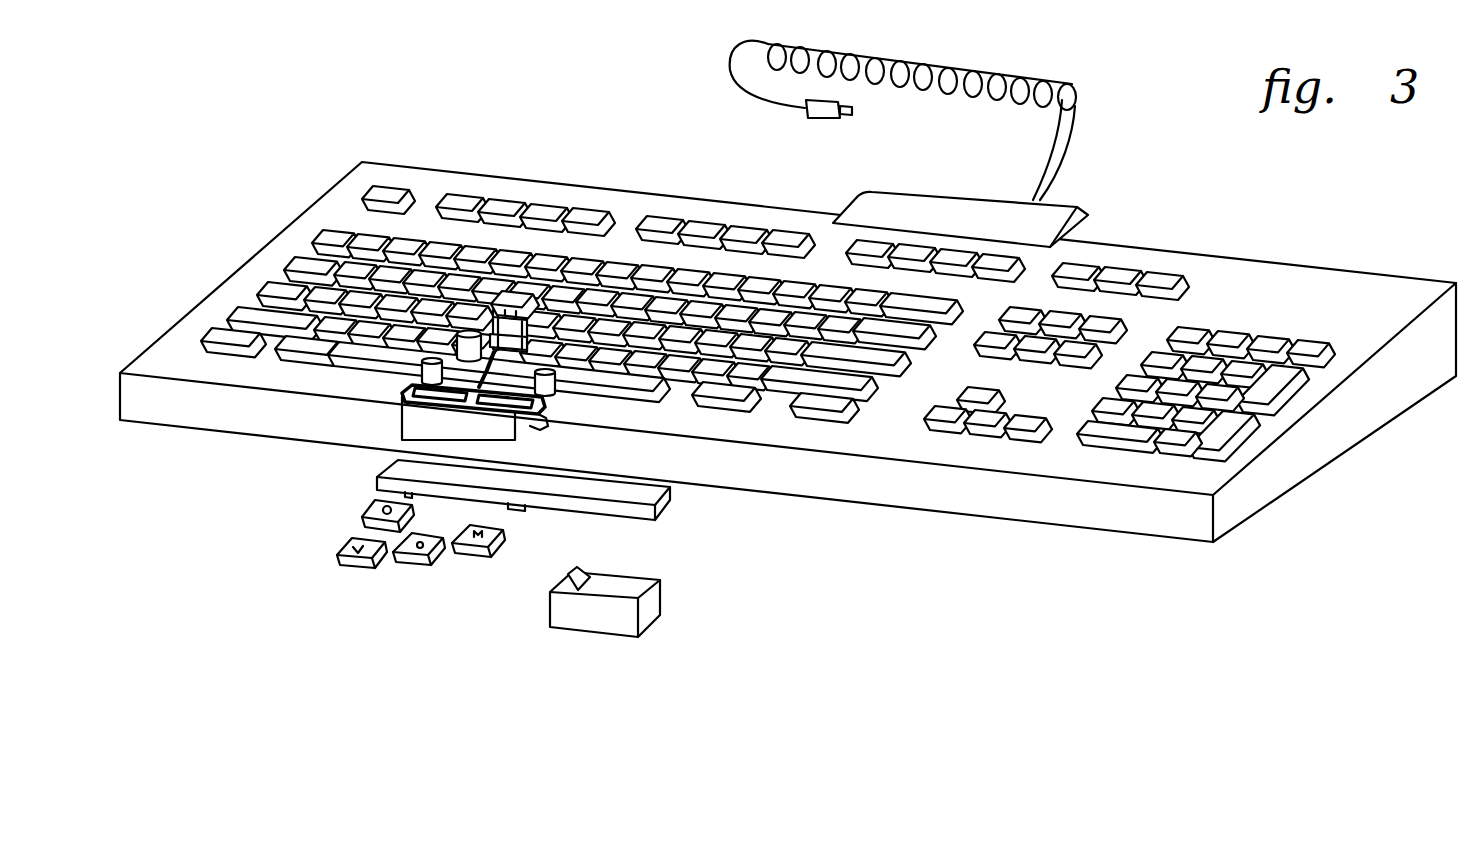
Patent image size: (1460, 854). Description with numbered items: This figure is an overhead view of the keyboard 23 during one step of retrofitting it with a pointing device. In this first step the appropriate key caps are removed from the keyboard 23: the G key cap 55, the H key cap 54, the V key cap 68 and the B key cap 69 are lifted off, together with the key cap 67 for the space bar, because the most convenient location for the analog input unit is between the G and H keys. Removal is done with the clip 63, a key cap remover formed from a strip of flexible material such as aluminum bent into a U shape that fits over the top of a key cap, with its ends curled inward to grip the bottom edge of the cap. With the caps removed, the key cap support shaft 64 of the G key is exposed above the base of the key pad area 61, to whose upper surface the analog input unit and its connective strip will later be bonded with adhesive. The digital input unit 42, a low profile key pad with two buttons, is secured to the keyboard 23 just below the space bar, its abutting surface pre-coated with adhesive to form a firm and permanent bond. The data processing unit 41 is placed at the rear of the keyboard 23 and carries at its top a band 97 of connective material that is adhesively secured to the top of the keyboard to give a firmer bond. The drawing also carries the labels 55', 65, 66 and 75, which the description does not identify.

The keyboard 23 is at (1252, 228).
The data processing unit 41 is at (972, 200).
The digital input unit 42 is at (532, 422).
The H key cap 54 is at (572, 575).
The G key cap 55 is at (347, 515).
The replacement keycap 55' is at (483, 589).
The key pad area 61 is at (578, 387).
The clip 63 is at (648, 604).
The key cap support shaft 64 is at (517, 288).
The key switch bracket 65 is at (470, 332).
The function key 66 is at (600, 213).
The key cap for the space bar 67 is at (672, 500).
The V key cap 68 is at (337, 556).
The B key cap 69 is at (428, 556).
The cable lead 75 is at (1068, 140).
The band of connective material 97 is at (860, 220).